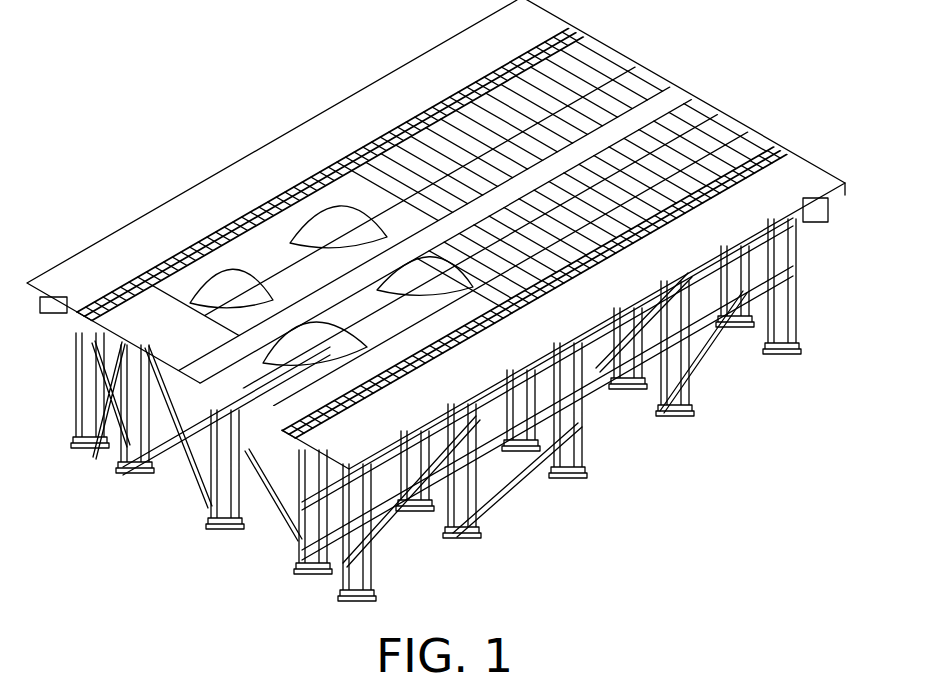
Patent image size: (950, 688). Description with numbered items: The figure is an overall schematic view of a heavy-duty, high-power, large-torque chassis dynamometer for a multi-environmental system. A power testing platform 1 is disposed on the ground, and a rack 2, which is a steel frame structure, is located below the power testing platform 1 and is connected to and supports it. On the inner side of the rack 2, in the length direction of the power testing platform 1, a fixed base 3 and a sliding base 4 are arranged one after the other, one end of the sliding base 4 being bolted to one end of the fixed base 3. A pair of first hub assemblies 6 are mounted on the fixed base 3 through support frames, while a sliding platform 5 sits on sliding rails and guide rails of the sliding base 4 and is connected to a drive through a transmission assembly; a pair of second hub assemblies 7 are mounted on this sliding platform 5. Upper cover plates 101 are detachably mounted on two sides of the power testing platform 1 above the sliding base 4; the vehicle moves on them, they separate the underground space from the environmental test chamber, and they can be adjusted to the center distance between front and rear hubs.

The power testing platform 1 is at (359, 150).
The upper cover plates 101 is at (620, 87).
The rack 2 is at (83, 345).
The fixed base 3 is at (385, 510).
The sliding base 4 is at (555, 350).
The sliding platform 5 is at (507, 447).
The first hub assemblies 6 is at (317, 347).
The second hub assemblies 7 is at (428, 272).